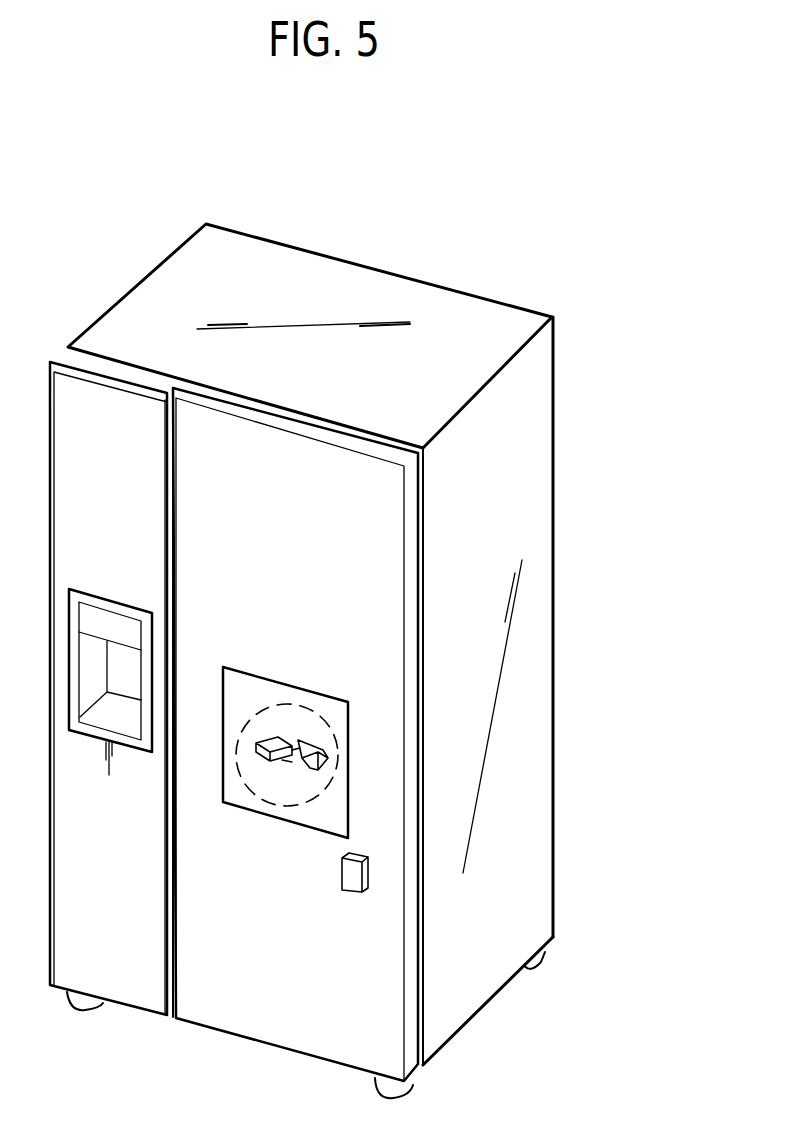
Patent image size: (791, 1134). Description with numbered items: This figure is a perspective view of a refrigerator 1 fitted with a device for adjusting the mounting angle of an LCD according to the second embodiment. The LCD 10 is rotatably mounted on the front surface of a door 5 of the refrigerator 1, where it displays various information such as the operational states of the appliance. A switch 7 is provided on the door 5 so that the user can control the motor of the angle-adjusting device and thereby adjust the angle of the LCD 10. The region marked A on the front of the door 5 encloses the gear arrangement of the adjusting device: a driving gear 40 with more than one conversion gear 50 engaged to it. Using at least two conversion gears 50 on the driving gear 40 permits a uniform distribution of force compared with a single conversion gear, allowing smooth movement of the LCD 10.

The refrigerator 1 is at (363, 253).
The door 5 is at (268, 1028).
The switch 7 is at (366, 875).
The LCD 10 is at (245, 685).
The driving gear 40 is at (291, 738).
The conversion gear 50 is at (258, 748).
The enlarged region A is at (338, 738).